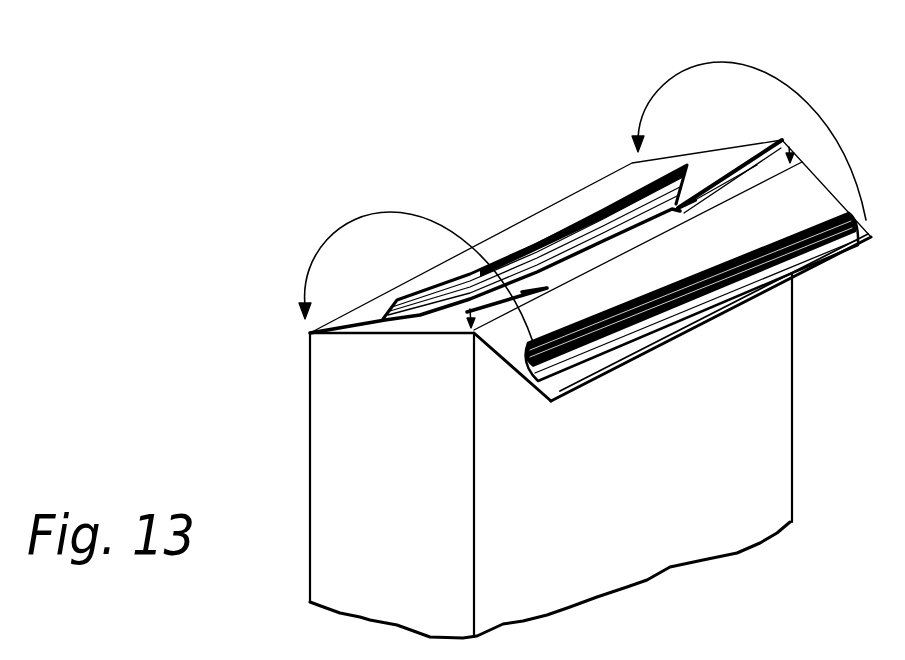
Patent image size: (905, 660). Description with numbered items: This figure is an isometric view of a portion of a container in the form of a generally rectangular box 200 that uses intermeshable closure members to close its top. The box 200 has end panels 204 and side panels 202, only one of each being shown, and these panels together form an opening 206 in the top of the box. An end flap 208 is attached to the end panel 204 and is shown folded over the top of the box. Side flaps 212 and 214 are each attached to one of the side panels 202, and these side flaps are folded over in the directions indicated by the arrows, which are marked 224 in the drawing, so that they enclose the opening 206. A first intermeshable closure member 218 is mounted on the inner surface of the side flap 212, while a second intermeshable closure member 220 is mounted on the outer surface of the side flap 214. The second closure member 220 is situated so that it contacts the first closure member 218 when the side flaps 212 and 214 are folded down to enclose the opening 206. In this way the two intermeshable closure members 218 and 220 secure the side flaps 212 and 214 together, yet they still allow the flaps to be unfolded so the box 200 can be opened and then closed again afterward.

The box 200 is at (586, 565).
The side panel 202 is at (712, 542).
The end panel 204 is at (330, 553).
The opening 206 is at (633, 218).
The end flap 208 is at (450, 323).
The side flap 212 is at (808, 264).
The side flap 214 is at (730, 157).
The first intermeshable closure member 218 is at (587, 352).
The second intermeshable closure member 220 is at (615, 190).
The angular range arcs 224 is at (408, 215).